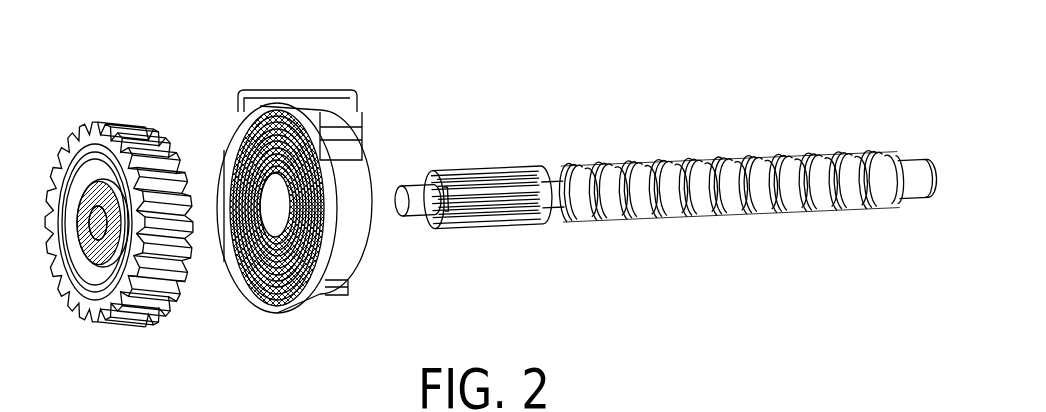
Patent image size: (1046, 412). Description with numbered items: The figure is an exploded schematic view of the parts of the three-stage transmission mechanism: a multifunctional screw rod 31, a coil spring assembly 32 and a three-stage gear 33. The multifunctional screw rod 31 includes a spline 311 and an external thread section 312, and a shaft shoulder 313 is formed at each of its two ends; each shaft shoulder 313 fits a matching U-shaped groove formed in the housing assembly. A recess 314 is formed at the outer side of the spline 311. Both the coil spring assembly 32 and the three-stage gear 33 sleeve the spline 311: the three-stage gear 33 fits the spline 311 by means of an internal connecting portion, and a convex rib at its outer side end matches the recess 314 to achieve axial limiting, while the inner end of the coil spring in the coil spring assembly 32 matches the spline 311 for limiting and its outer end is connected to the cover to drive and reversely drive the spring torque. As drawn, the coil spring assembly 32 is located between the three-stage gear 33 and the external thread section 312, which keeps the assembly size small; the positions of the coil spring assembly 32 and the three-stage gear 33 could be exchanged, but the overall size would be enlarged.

The multifunctional screw rod 31 is at (670, 175).
The spline 311 is at (478, 167).
The external thread section 312 is at (720, 160).
The shaft shoulder 313 is at (422, 185).
The recess 314 is at (437, 233).
The coil spring assembly 32 is at (300, 107).
The three-stage gear 33 is at (127, 122).